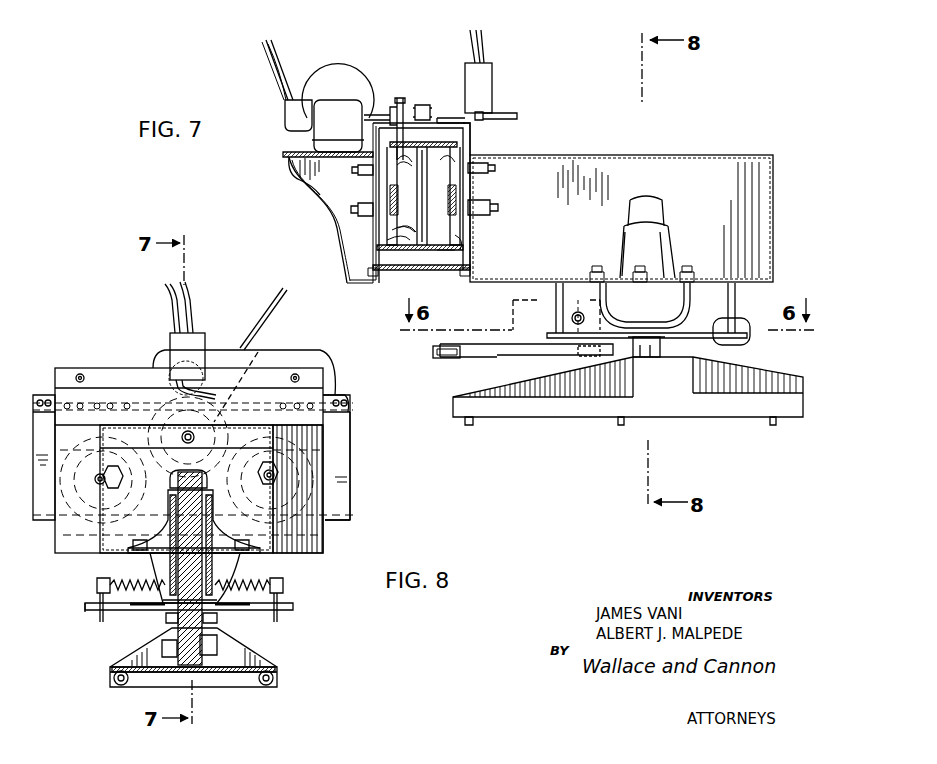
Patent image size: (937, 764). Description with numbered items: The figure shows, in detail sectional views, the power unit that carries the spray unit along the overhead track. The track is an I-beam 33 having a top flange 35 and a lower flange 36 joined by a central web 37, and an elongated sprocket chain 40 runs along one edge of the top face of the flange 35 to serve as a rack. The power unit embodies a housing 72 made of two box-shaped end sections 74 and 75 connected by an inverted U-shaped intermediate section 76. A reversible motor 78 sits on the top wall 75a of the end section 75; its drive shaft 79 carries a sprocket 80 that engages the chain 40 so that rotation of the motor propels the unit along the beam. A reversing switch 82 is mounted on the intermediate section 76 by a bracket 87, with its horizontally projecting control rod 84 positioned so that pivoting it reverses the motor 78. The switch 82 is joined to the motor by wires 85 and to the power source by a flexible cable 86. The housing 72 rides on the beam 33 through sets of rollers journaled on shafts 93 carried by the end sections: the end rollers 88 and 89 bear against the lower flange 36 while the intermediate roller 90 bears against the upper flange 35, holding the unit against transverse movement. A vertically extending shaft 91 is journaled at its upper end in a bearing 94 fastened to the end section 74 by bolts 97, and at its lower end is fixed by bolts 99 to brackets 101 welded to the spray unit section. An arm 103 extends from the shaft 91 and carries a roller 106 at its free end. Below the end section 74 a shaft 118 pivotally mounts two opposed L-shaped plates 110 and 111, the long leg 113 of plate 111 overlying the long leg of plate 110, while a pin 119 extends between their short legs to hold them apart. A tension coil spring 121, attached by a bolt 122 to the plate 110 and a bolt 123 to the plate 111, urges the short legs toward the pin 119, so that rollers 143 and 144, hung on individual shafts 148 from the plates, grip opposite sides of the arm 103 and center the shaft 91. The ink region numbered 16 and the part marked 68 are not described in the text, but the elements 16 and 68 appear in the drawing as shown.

In FIG. 7, the gear housing 16 is at (408, 203).
In FIG. 7, the beam 33 is at (433, 254).
In FIG. 8, the beam 33 is at (337, 395).
In FIG. 7, the top flange 35 is at (430, 141).
In FIG. 8, the top flange 35 is at (341, 428).
In FIG. 7, the lower flange 36 is at (448, 252).
In FIG. 8, the lower flange 36 is at (352, 516).
In FIG. 7, the central web 37 is at (433, 196).
In FIG. 8, the central web 37 is at (340, 493).
In FIG. 7, the sprocket chain 40 is at (405, 117).
In FIG. 7, the foot 68 is at (470, 426).
In FIG. 8, the foot 68 is at (116, 690).
In FIG. 7, the housing 72 is at (331, 197).
In FIG. 7, the end section 74 is at (681, 152).
In FIG. 7, the end section 75 is at (300, 178).
In FIG. 7, the top wall 75a is at (298, 156).
In FIG. 7, the intermediate section 76 is at (473, 135).
In FIG. 8, the intermediate section 76 is at (279, 366).
In FIG. 7, the reversible motor 78 is at (334, 80).
In FIG. 7, the drive shaft 79 is at (388, 112).
In FIG. 7, the sprocket 80 is at (399, 98).
In FIG. 7, the reversing switch 82 is at (486, 78).
In FIG. 8, the reversing switch 82 is at (207, 340).
In FIG. 7, the control rod 84 is at (509, 113).
In FIG. 8, the control rod 84 is at (212, 394).
In FIG. 7, the wires 85 is at (488, 42).
In FIG. 8, the wires 85 is at (172, 304).
In FIG. 7, the flexible cable 86 is at (276, 65).
In FIG. 8, the flexible cable 86 is at (278, 302).
In FIG. 7, the bracket 87 is at (466, 90).
In FIG. 7, the end roller 88 is at (415, 246).
In FIG. 8, the end roller 88 is at (300, 456).
In FIG. 8, the end roller 89 is at (62, 524).
In FIG. 7, the intermediate roller 90 is at (410, 197).
In FIG. 8, the intermediate roller 90 is at (246, 377).
In FIG. 7, the shaft 91 is at (661, 346).
In FIG. 8, the shaft 91 is at (160, 606).
In FIG. 7, the shafts 93 is at (495, 208).
In FIG. 8, the shafts 93 is at (259, 478).
In FIG. 7, the bearing 94 is at (662, 210).
In FIG. 8, the bearing 94 is at (208, 526).
In FIG. 7, the bolts 97 is at (672, 310).
In FIG. 8, the bolts 97 is at (255, 555).
In FIG. 7, the bolts 99 is at (648, 366).
In FIG. 8, the bolts 99 is at (200, 670).
In FIG. 7, the brackets 101 is at (646, 388).
In FIG. 8, the brackets 101 is at (254, 657).
In FIG. 7, the arm 103 is at (506, 356).
In FIG. 8, the arm 103 is at (217, 629).
In FIG. 7, the roller 106 is at (438, 350).
In FIG. 8, the L-shaped plate 110 is at (294, 612).
In FIG. 8, the L-shaped plate 111 is at (85, 612).
In FIG. 7, the long leg 113 is at (557, 326).
In FIG. 7, the shaft 118 is at (737, 298).
In FIG. 7, the pin 119 is at (555, 292).
In FIG. 8, the tension coil spring 121 is at (238, 586).
In FIG. 8, the bolt 122 is at (284, 586).
In FIG. 7, the bolt 123 is at (580, 300).
In FIG. 8, the bolt 123 is at (97, 585).
In FIG. 7, the roller 143 is at (611, 352).
In FIG. 8, the roller 143 is at (216, 620).
In FIG. 8, the roller 144 is at (166, 622).
In FIG. 7, the shafts 148 is at (578, 352).